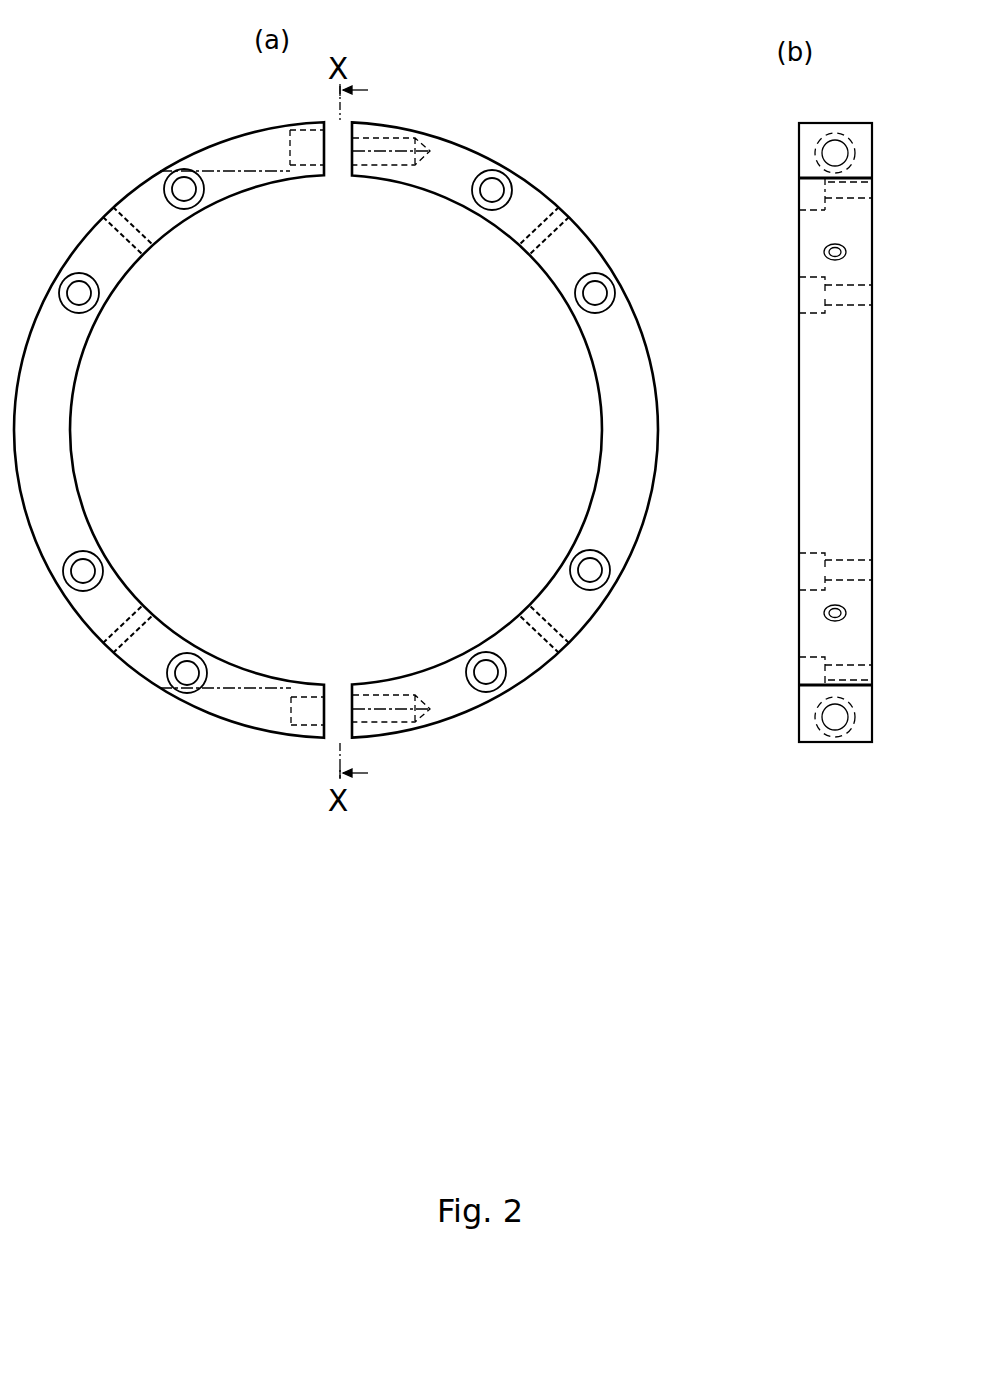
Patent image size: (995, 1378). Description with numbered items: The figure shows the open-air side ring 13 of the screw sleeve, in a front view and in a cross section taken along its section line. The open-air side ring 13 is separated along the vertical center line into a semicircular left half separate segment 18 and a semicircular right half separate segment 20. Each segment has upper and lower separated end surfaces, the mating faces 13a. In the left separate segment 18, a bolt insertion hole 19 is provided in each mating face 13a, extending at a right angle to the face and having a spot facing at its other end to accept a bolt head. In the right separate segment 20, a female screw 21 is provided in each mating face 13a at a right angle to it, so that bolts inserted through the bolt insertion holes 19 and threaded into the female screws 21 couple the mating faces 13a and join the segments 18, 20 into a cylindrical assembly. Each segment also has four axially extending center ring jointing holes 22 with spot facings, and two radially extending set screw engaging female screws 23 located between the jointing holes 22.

The open-air side ring 13 is at (336, 397).
The mating face 13a is at (338, 176).
The left half separate segment 18 is at (124, 184).
The bolt insertion hole 19 is at (292, 166).
The right half separate segment 20 is at (550, 190).
The female screw 21 is at (384, 165).
The center ring jointing hole 22 is at (188, 193).
The set screw engaging female screw 23 is at (145, 253).